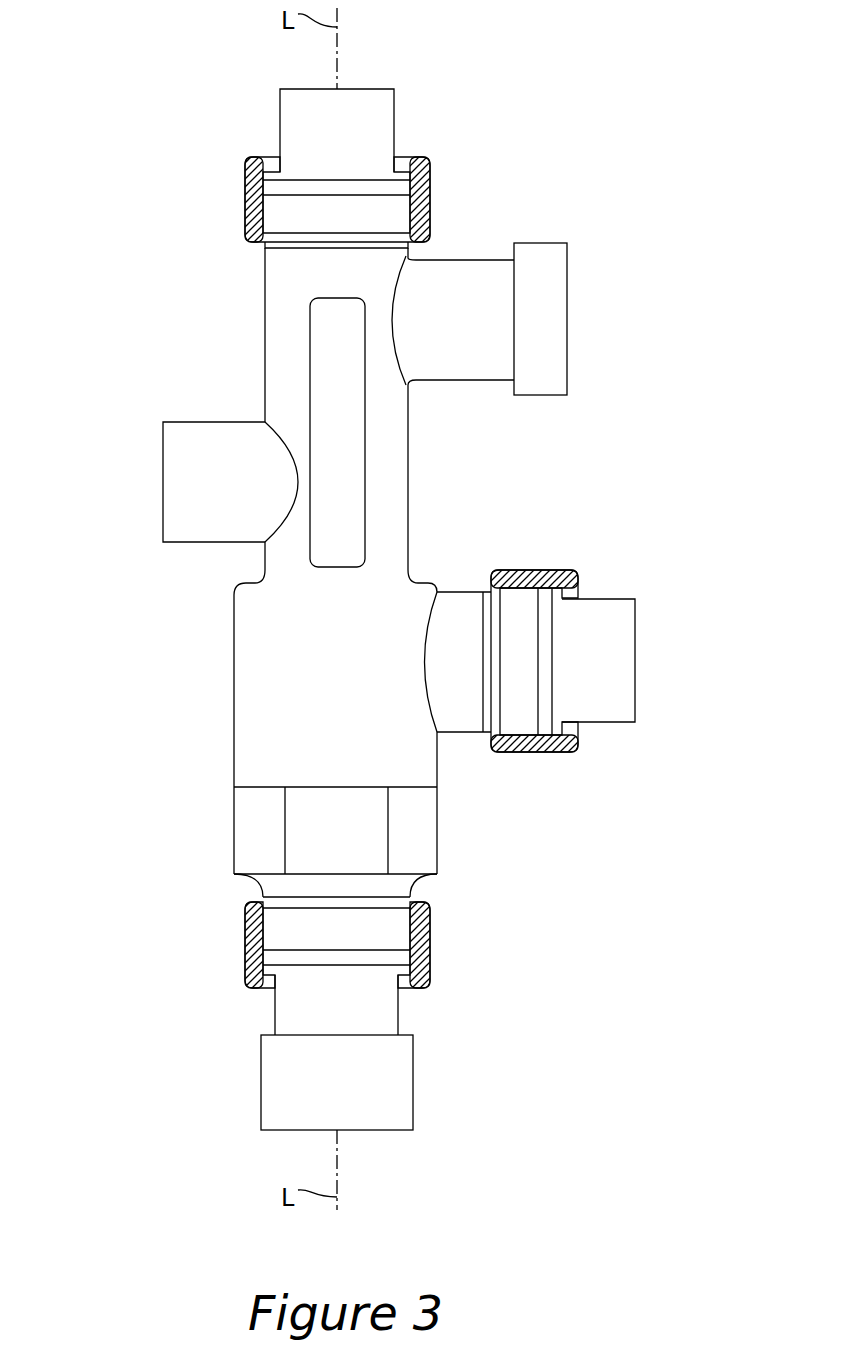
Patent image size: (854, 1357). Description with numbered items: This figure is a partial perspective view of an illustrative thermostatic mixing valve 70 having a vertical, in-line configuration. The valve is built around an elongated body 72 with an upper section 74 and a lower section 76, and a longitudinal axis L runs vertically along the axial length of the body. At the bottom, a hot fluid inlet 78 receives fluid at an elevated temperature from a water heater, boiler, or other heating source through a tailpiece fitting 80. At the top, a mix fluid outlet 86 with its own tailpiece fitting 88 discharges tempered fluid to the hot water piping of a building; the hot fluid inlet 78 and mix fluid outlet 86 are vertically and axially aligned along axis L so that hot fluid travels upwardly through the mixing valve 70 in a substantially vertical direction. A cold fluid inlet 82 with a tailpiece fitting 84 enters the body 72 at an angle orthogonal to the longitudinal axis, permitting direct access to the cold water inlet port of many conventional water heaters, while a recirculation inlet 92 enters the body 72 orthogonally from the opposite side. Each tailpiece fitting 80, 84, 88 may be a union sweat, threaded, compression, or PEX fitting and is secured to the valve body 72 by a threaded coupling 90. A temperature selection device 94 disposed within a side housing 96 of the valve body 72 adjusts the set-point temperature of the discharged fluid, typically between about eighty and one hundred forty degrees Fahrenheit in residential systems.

The thermostatic mixing valve 70 is at (509, 64).
The elongated body 72 is at (400, 487).
The upper section 74 is at (208, 272).
The lower section 76 is at (211, 895).
The hot fluid inlet 78 is at (455, 923).
The tailpiece fitting 80 is at (395, 1070).
The cold fluid inlet 82 is at (592, 555).
The tailpiece fitting 84 is at (628, 661).
The mix fluid outlet 86 is at (451, 177).
The tailpiece fitting 88 is at (393, 115).
The threaded coupling 90 is at (253, 192).
The recirculation inlet 92 is at (130, 471).
The temperature selection device 94 is at (591, 290).
The side housing 96 is at (488, 270).